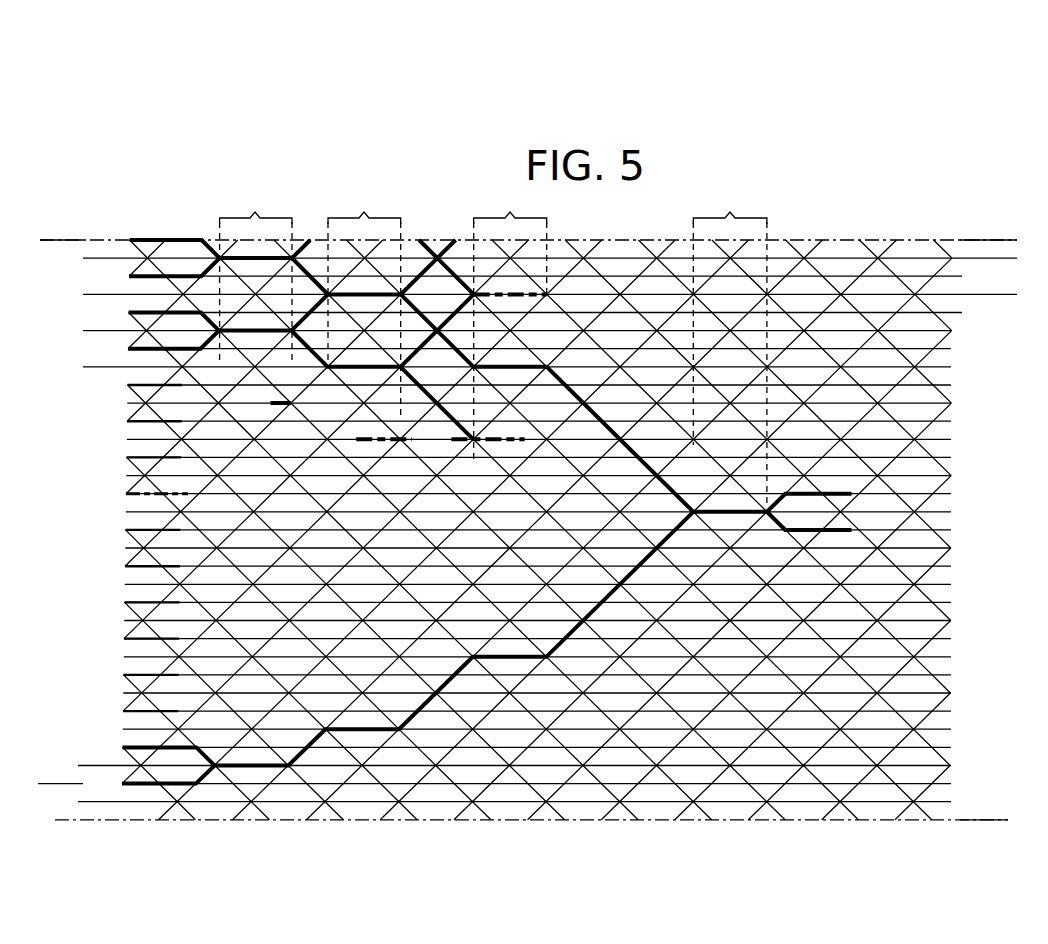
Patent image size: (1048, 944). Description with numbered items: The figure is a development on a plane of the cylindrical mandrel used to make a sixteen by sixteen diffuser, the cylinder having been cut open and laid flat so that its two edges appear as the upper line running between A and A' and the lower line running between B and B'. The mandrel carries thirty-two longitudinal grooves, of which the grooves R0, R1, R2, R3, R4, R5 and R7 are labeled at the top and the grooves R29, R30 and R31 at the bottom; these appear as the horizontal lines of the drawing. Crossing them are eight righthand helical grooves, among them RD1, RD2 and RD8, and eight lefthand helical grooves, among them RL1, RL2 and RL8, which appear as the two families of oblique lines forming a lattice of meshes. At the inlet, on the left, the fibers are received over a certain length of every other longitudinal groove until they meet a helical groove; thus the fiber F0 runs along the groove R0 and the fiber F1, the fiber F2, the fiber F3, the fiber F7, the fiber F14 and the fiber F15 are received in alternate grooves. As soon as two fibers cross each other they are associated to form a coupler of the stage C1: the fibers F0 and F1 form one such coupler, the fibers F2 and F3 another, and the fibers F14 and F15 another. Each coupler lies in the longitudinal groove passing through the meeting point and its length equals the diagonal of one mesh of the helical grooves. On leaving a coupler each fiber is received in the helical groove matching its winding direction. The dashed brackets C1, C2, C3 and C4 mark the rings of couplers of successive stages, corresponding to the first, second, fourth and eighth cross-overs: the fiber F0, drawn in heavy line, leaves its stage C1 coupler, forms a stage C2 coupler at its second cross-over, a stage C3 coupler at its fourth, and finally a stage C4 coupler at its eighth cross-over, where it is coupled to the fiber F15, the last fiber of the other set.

The longitudinal groove R0 is at (528, 241).
The longitudinal groove R1 is at (552, 261).
The longitudinal groove R2 is at (559, 280).
The longitudinal groove R3 is at (552, 297).
The longitudinal groove R4 is at (559, 314).
The longitudinal groove R5 is at (505, 330).
The longitudinal groove R7 is at (505, 367).
The longitudinal groove R29 is at (498, 766).
The longitudinal groove R30 is at (962, 777).
The longitudinal groove R31 is at (962, 800).
The fiber F0 is at (130, 240).
The fiber F1 is at (129, 276).
The fiber F2 is at (129, 312).
The fiber F3 is at (128, 349).
The fiber F7 is at (132, 494).
The fiber F14 is at (123, 747).
The fiber F15 is at (122, 784).
The lefthand helical groove RL1 is at (157, 252).
The lefthand helical groove RL2 is at (227, 252).
The lefthand helical groove RL8 is at (666, 246).
The righthand helical groove RD1 is at (703, 819).
The righthand helical groove RD2 is at (633, 819).
The righthand helical groove RD8 is at (188, 818).
The coupler stage C1 is at (256, 274).
The coupler stage C2 is at (364, 302).
The coupler stage C3 is at (510, 323).
The coupler stage C4 is at (730, 345).
The section line end A is at (61, 226).
The section line end A' is at (988, 226).
The section line end B is at (531, 835).
The section line end B' is at (984, 835).